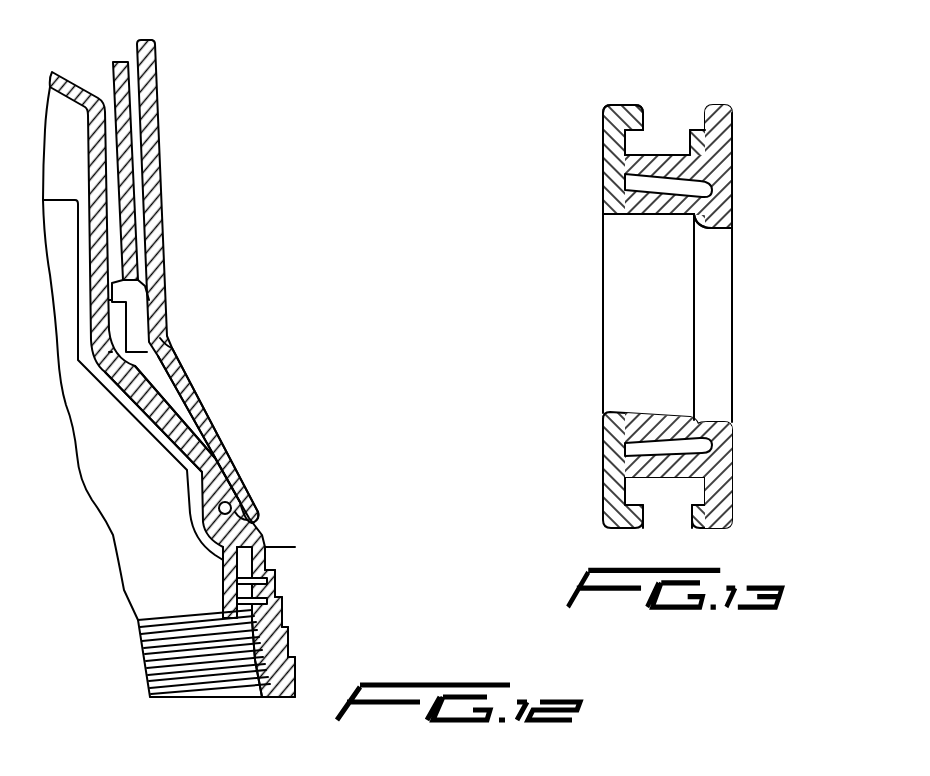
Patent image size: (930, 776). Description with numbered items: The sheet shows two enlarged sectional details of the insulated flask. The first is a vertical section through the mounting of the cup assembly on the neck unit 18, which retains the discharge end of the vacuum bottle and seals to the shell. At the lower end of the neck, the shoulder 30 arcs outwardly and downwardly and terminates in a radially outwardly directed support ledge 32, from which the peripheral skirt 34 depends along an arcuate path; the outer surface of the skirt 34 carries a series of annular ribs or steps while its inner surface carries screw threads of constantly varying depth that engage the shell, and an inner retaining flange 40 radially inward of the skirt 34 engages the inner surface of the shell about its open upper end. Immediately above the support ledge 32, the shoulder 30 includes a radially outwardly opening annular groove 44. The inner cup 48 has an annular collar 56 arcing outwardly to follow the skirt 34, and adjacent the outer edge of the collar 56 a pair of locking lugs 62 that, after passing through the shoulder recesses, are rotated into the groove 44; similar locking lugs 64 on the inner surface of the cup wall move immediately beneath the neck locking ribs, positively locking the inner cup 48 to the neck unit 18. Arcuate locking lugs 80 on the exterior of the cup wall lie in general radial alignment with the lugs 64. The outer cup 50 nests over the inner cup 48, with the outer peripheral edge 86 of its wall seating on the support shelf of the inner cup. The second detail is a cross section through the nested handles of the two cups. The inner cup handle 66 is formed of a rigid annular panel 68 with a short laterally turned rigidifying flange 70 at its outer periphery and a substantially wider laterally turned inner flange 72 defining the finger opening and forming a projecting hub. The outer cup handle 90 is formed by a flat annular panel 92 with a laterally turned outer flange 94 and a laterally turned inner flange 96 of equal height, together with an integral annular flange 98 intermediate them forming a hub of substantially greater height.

In FIG. 12, the neck unit 18 is at (108, 220).
In FIG. 12, the shoulder 30 is at (178, 412).
In FIG. 12, the support ledge 32 is at (252, 522).
In FIG. 12, the peripheral skirt 34 is at (290, 637).
In FIG. 12, the inner retaining flange 40 is at (223, 588).
In FIG. 12, the annular groove 44 is at (240, 517).
In FIG. 12, the inner cup 48 is at (138, 127).
In FIG. 12, the outer cup 50 is at (158, 63).
In FIG. 12, the annular collar 56 is at (237, 437).
In FIG. 12, the locking lugs 62 is at (218, 507).
In FIG. 12, the locking lugs 64 is at (118, 292).
In FIG. 13, the handle 66 is at (604, 103).
In FIG. 13, the annular panel 68 is at (615, 182).
In FIG. 13, the rigidifying flange 70 is at (630, 113).
In FIG. 13, the inner flange 72 is at (663, 207).
In FIG. 12, the locking lugs 80 is at (153, 313).
In FIG. 12, the outer peripheral edge 86 is at (167, 350).
In FIG. 13, the handle 90 is at (735, 103).
In FIG. 13, the annular panel 92 is at (723, 137).
In FIG. 13, the outer flange 94 is at (700, 115).
In FIG. 13, the inner flange 96 is at (730, 222).
In FIG. 13, the annular flange 98 is at (663, 470).